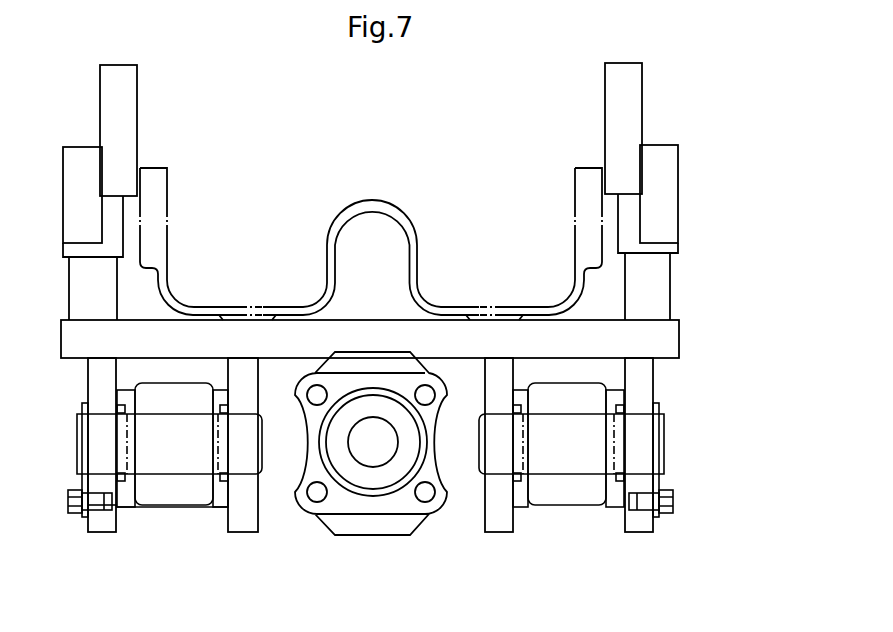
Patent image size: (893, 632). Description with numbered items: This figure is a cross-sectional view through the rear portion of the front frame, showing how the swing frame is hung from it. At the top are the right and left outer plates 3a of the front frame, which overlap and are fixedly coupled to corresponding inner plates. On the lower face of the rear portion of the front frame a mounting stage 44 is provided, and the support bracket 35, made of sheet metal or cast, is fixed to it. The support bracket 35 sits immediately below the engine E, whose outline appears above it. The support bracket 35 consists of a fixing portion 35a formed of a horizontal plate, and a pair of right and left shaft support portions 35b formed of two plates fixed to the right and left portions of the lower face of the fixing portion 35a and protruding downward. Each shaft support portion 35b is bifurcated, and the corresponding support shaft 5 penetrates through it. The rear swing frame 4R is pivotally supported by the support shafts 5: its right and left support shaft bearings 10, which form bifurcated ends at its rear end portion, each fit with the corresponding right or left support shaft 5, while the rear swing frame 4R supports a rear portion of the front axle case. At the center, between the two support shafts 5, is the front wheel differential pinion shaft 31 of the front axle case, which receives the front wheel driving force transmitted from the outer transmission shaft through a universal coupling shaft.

The outer plate 3a is at (617, 103).
The engine E is at (368, 200).
The mounting stage 44 is at (660, 279).
The support bracket 35 is at (435, 426).
The fixing portion 35a is at (667, 340).
The shaft support portion 35b is at (645, 378).
The support shaft 5 is at (192, 457).
The front wheel differential pinion shaft 31 is at (365, 458).
The rear swing frame 4R is at (150, 505).
The support shaft bearing 10 is at (167, 505).